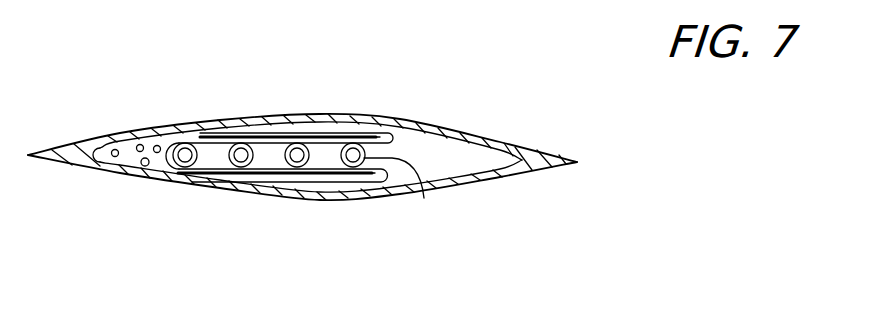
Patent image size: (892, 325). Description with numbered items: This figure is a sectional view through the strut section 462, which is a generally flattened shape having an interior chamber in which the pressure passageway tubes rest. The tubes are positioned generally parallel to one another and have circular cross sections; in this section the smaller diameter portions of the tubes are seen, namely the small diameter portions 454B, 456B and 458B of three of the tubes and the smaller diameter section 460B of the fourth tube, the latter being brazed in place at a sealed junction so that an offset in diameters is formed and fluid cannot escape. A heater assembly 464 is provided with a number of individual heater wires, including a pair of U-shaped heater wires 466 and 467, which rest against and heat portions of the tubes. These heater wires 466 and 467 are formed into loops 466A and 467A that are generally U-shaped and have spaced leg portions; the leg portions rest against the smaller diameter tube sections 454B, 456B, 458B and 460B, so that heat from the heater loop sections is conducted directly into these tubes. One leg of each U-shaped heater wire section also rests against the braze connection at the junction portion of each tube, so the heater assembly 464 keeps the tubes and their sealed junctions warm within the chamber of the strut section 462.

The small diameter portion 454B is at (236, 123).
The small diameter portion 458B is at (286, 99).
The U-shaped heater wire 466 is at (328, 100).
The heater wire loop 466A is at (436, 113).
The strut section 462 is at (318, 145).
The heater assembly 464 is at (101, 187).
The small diameter portion 456B is at (283, 208).
The U-shaped heater wire 467 is at (306, 219).
The heater wire loop 467A is at (374, 240).
The smaller diameter section 460B is at (449, 199).